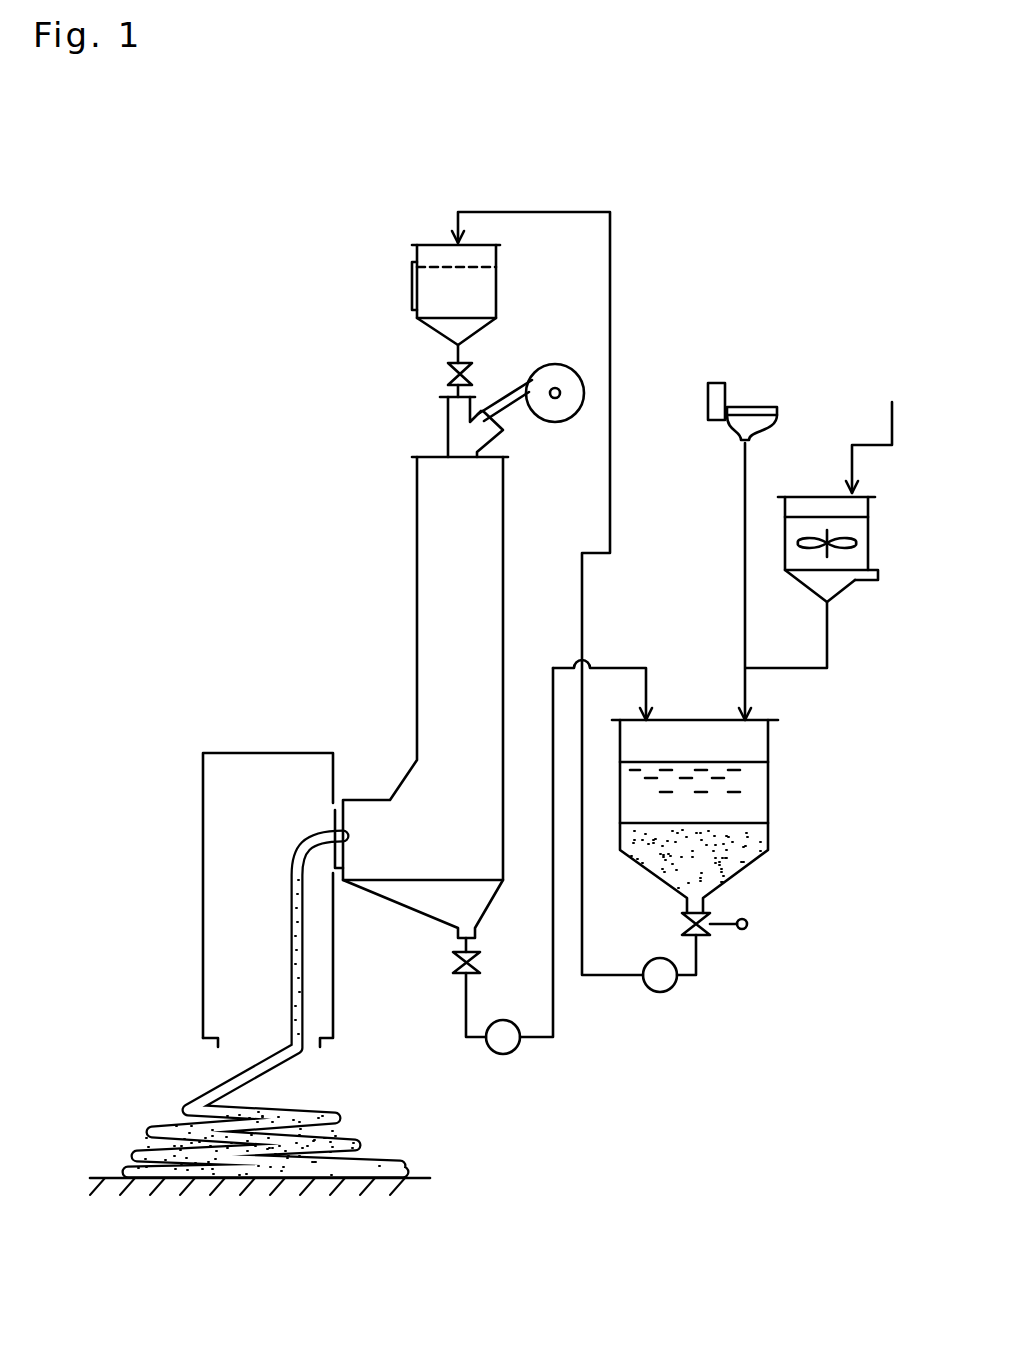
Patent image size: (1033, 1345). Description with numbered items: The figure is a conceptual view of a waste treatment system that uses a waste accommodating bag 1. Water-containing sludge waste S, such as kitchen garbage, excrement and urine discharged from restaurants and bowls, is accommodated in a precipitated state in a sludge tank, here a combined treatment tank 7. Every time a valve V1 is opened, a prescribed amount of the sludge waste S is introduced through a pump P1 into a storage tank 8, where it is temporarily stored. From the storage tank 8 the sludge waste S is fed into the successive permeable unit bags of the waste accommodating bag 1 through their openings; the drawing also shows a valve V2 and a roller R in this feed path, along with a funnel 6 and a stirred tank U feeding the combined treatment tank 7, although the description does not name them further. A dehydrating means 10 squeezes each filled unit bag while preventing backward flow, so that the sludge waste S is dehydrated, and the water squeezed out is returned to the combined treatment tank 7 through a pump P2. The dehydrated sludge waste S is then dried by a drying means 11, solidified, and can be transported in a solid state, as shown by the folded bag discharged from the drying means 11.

The waste accommodating bag 1 is at (505, 413).
The funnel 6 is at (755, 422).
The combined treatment tank 7 is at (753, 748).
The storage tank 8 is at (440, 279).
The dehydrating means 10 is at (393, 527).
The drying means 11 is at (225, 812).
The roller R is at (556, 375).
The sludge waste S is at (740, 848).
The mixing tank U is at (857, 532).
The valve V1 is at (703, 937).
The valve V2 is at (450, 375).
The pump P1 is at (660, 992).
The pump P2 is at (508, 1053).